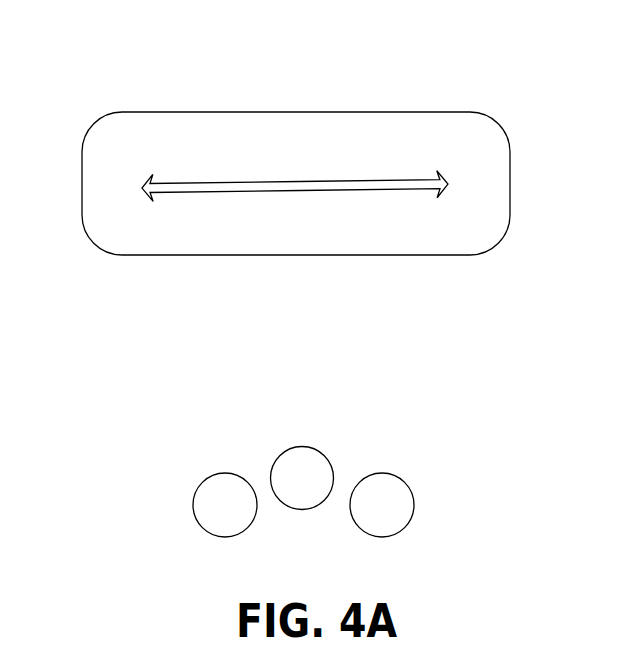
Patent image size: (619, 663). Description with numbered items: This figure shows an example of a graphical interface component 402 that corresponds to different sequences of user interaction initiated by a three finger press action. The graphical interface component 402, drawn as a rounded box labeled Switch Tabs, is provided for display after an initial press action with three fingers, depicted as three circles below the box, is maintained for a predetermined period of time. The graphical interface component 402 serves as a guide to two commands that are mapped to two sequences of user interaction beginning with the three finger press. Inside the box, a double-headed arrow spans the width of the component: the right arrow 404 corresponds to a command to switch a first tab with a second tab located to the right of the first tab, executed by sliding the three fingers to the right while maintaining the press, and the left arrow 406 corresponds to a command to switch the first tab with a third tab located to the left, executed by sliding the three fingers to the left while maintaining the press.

The graphical interface component 402 is at (297, 112).
The right arrow 404 is at (436, 184).
The left arrow 406 is at (164, 188).